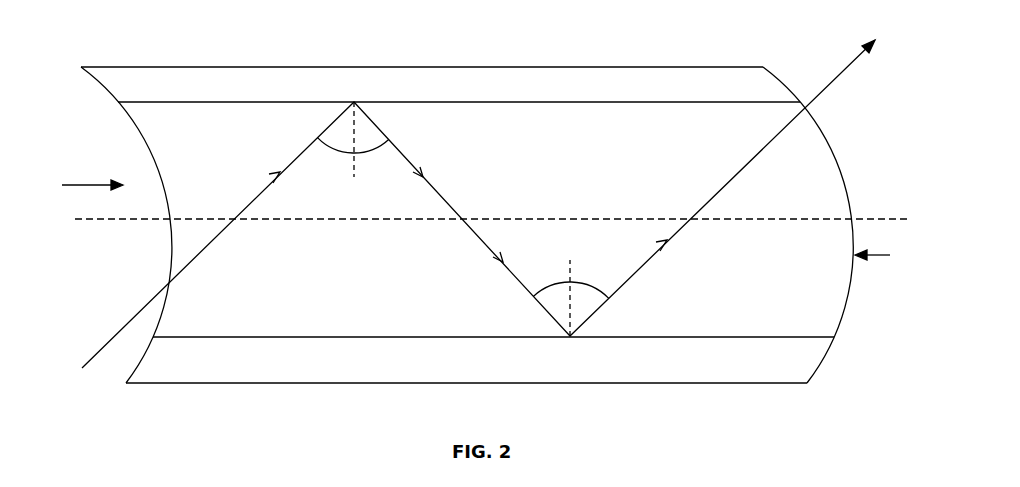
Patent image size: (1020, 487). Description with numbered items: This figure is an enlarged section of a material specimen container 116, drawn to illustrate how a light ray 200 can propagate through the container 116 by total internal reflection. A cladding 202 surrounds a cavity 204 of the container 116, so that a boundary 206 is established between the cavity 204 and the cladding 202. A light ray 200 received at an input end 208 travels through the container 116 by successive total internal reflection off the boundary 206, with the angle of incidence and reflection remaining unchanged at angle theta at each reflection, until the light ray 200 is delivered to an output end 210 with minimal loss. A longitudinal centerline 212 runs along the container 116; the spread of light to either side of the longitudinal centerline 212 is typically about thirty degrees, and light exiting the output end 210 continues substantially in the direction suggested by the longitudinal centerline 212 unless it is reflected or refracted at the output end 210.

The container 116 is at (282, 308).
The light ray 200 is at (114, 334).
The cladding 202 is at (582, 95).
The cavity 204 is at (591, 180).
The boundary 206 is at (646, 102).
The input end 208 is at (72, 184).
The output end 210 is at (891, 256).
The longitudinal centerline 212 is at (865, 220).